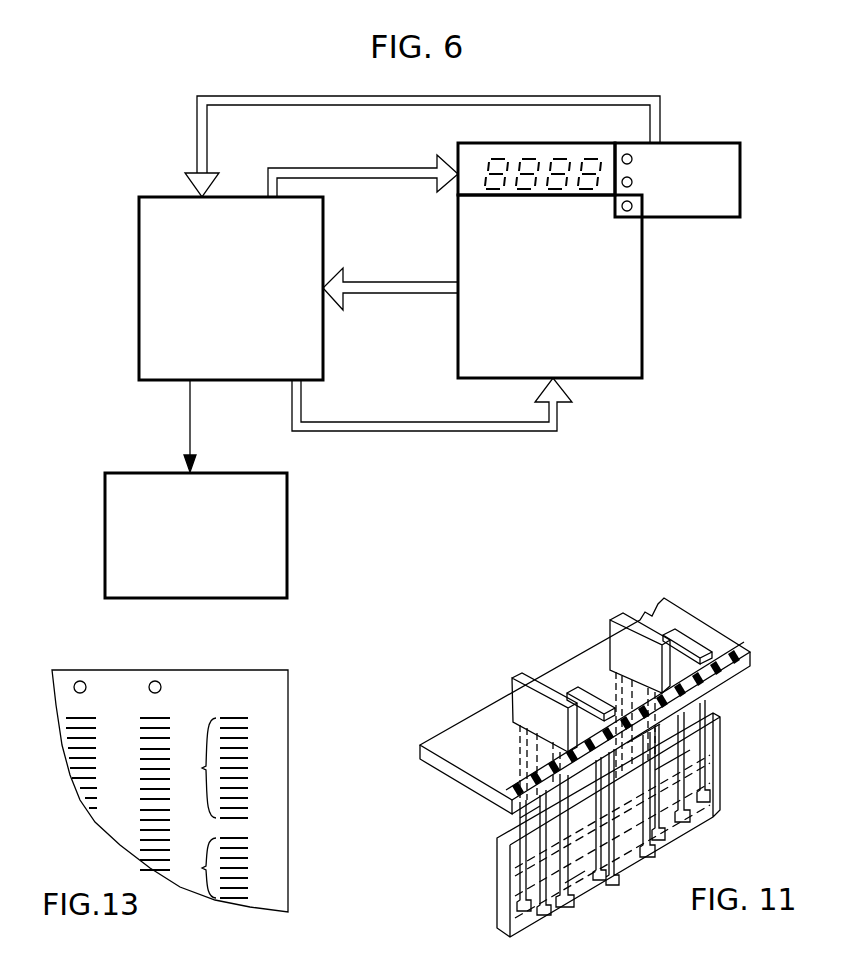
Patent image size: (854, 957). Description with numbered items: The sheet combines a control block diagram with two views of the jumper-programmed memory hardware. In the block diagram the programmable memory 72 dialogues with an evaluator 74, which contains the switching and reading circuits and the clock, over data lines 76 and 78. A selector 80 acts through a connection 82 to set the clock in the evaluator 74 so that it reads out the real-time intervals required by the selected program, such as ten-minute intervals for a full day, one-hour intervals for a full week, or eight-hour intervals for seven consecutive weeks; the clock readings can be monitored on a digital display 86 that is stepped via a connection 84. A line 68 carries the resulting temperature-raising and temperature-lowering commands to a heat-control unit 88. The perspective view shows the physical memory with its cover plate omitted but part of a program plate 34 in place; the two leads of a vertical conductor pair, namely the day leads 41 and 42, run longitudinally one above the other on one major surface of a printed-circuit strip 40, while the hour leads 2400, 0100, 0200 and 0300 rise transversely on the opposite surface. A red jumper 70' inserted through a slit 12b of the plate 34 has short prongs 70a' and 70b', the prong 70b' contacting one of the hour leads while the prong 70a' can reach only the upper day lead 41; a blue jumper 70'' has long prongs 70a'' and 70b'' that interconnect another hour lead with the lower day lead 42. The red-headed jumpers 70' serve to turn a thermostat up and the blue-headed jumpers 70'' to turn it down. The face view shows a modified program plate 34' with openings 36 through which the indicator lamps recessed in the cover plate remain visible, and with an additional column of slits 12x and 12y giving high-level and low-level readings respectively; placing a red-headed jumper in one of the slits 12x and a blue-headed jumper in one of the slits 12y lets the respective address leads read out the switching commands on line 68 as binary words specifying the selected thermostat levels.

In FIG. 6, the evaluator 74 is at (140, 222).
In FIG. 6, the programmable memory 72 is at (637, 293).
In FIG. 6, the digital display 86 is at (466, 185).
In FIG. 6, the selector 80 is at (735, 160).
In FIG. 6, the connection 82 is at (585, 108).
In FIG. 6, the connection 84 is at (382, 180).
In FIG. 6, the data line 76 is at (382, 298).
In FIG. 6, the data line 78 is at (292, 410).
In FIG. 6, the line 68 is at (194, 433).
In FIG. 6, the heat-control unit 88 is at (280, 510).
In FIG. 13, the modified program plate 34' is at (200, 787).
In FIG. 13, the openings 36 is at (150, 682).
In FIG. 13, the slit 12b is at (71, 751).
In FIG. 11, the slit 12b is at (692, 645).
In FIG. 13, the slits 12x is at (246, 739).
In FIG. 13, the slits 12y is at (246, 859).
In FIG. 11, the program plate 34 is at (585, 706).
In FIG. 11, the red jumper 70' is at (633, 678).
In FIG. 11, the blue jumper 70'' is at (555, 718).
In FIG. 11, the printed-circuit strip 40 is at (497, 925).
In FIG. 11, the day lead 41 is at (493, 868).
In FIG. 11, the day lead 42 is at (493, 903).
In FIG. 11, the hour lead 2400 is at (553, 907).
In FIG. 11, the hour lead 0100 is at (605, 877).
In FIG. 11, the hour lead 0200 is at (648, 848).
In FIG. 11, the hour lead 0300 is at (700, 818).
In FIG. 11, the short prong 70a' is at (706, 736).
In FIG. 11, the short prong 70b' is at (719, 765).
In FIG. 11, the long prong 70a'' is at (478, 818).
In FIG. 11, the long prong 70b'' is at (619, 905).